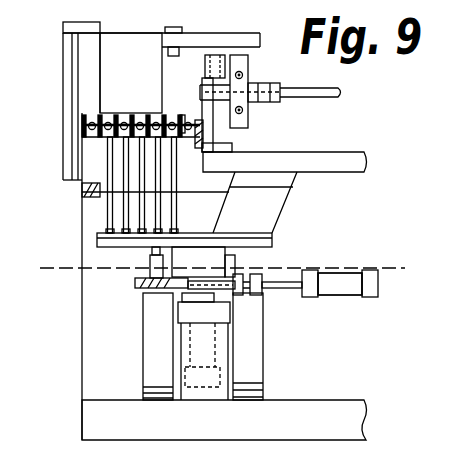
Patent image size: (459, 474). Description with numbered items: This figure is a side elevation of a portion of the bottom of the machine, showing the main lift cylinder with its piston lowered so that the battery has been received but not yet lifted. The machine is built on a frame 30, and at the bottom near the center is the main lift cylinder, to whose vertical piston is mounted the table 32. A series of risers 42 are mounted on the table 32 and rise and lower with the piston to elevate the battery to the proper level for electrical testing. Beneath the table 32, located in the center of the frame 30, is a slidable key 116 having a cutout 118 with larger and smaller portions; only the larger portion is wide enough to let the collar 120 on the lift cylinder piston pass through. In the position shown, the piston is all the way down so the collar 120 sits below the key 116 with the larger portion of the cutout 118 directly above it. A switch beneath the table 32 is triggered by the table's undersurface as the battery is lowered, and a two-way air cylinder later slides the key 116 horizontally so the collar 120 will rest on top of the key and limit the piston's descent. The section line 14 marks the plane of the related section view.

The risers 42 is at (122, 170).
The section line 14 is at (50, 268).
The table 32 is at (117, 246).
The cutout 118 is at (223, 272).
The slidable key 116 is at (295, 275).
The collar 120 is at (223, 308).
The frame 30 is at (330, 407).